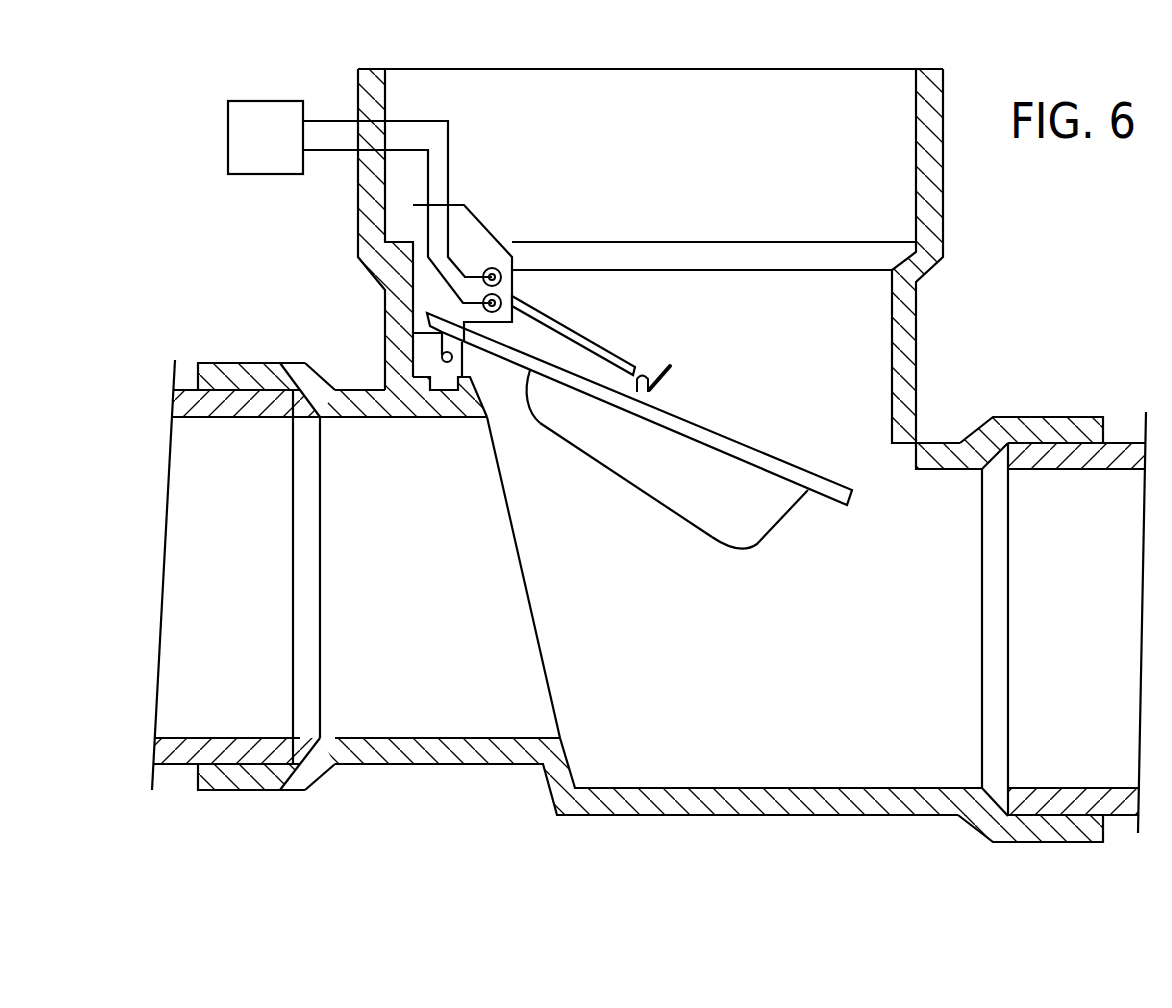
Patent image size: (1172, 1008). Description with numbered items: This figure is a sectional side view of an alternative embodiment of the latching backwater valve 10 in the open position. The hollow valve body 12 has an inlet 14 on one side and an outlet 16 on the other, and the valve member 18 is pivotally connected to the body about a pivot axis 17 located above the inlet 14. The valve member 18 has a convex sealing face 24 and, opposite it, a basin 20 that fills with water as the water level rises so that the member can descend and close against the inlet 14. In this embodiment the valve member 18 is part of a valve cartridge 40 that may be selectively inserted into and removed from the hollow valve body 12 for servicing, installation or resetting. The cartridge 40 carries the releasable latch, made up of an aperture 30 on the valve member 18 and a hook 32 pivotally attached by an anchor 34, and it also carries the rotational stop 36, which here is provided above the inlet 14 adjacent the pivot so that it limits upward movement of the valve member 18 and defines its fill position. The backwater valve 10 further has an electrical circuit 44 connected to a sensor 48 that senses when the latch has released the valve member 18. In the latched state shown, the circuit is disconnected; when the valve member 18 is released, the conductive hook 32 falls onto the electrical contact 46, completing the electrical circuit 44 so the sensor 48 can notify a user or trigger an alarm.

The backwater valve 10 is at (985, 292).
The hollow valve body 12 is at (387, 316).
The inlet 14 is at (383, 628).
The outlet 16 is at (925, 650).
The pivot axis 17 is at (442, 357).
The valve member 18 is at (767, 508).
The basin 20 is at (713, 483).
The convex sealing face 24 is at (637, 487).
The aperture 30 is at (657, 387).
The hook 32 is at (600, 342).
The anchor 34 is at (492, 268).
The rotational stop 36 is at (422, 334).
The valve cartridge 40 is at (582, 176).
The electrical circuit 44 is at (447, 121).
The electrical contact 46 is at (513, 297).
The sensor 48 is at (247, 137).